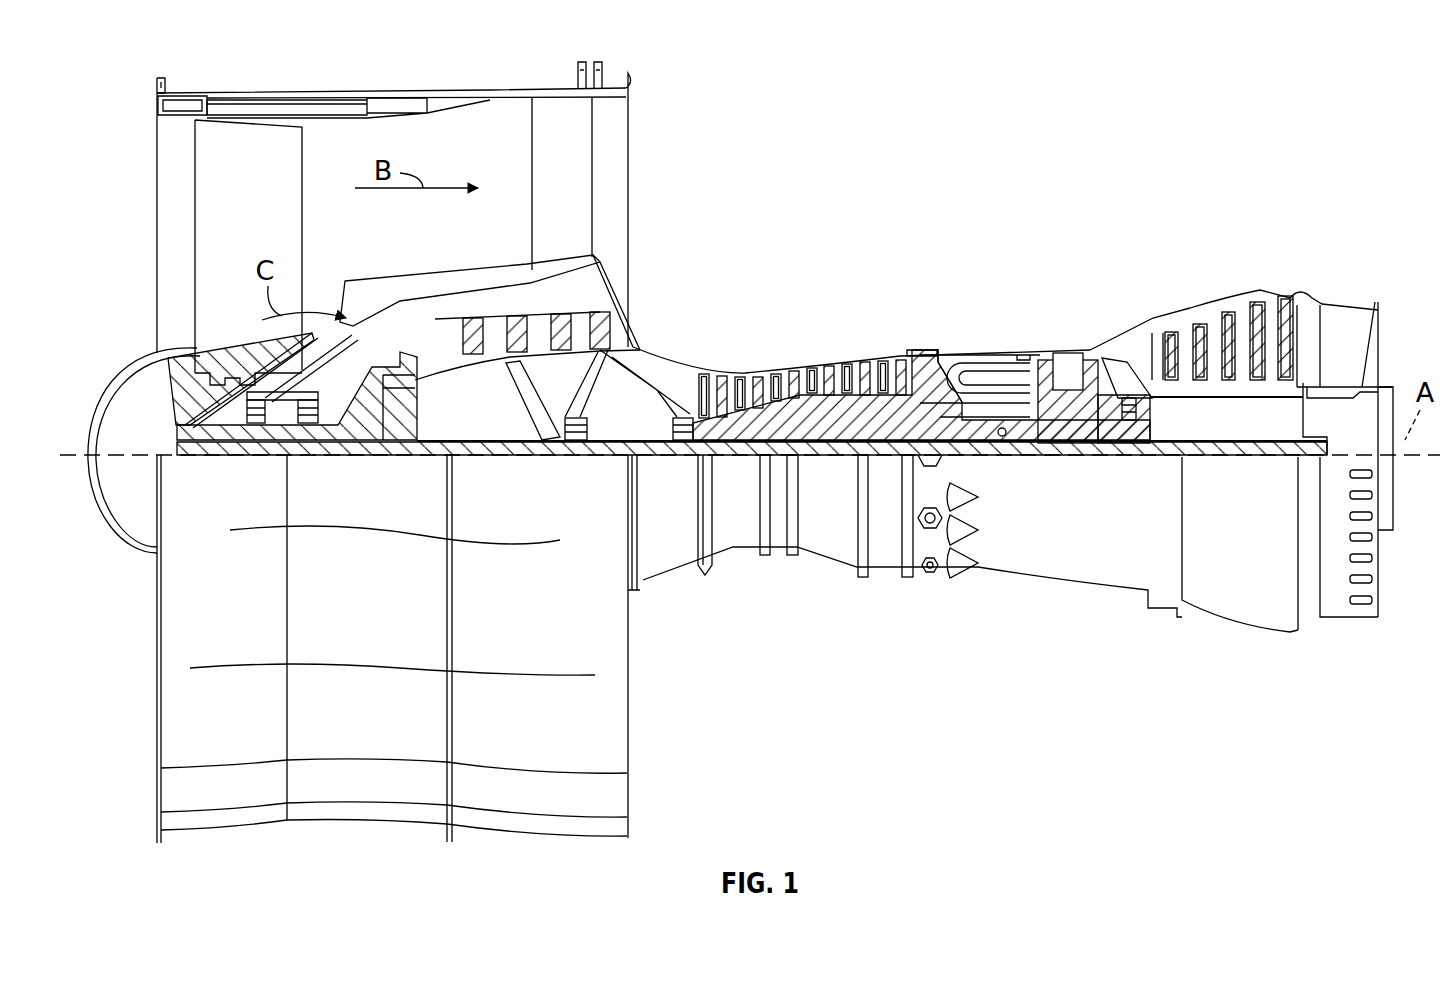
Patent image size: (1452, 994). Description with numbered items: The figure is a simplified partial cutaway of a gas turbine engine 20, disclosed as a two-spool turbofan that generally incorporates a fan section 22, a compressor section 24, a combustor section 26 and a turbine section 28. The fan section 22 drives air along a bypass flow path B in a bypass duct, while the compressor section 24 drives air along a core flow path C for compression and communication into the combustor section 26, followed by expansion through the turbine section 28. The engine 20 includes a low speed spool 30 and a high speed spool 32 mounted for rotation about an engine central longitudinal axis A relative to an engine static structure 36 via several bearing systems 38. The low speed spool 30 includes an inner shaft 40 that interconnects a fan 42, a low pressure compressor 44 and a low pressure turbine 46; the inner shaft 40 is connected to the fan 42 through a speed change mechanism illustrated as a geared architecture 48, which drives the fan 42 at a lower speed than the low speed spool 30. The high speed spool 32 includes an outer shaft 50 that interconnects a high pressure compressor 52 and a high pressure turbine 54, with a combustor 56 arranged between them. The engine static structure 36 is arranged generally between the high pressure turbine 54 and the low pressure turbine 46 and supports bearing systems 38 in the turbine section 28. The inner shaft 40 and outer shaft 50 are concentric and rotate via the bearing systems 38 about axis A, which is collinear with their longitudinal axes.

The gas turbine engine 20 is at (1198, 126).
The fan section 22 is at (268, 84).
The compressor section 24 is at (818, 315).
The combustor section 26 is at (985, 315).
The turbine section 28 is at (1132, 295).
The low speed spool 30 is at (850, 462).
The high speed spool 32 is at (920, 378).
The engine static structure 36 is at (888, 578).
The bearing systems 38 is at (260, 417).
The inner shaft 40 is at (642, 452).
The fan 42 is at (243, 211).
The low pressure compressor 44 is at (543, 333).
The low pressure turbine 46 is at (1228, 305).
The geared architecture 48 is at (397, 423).
The outer shaft 50 is at (1008, 437).
The high pressure compressor 52 is at (807, 423).
The high pressure turbine 54 is at (1068, 352).
The combustor 56 is at (992, 375).